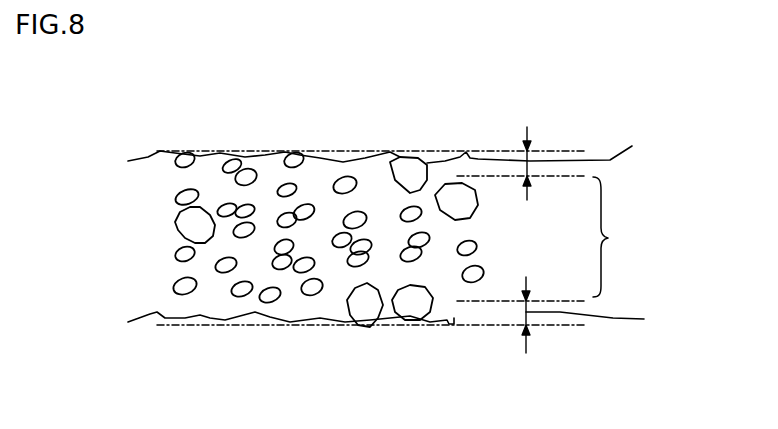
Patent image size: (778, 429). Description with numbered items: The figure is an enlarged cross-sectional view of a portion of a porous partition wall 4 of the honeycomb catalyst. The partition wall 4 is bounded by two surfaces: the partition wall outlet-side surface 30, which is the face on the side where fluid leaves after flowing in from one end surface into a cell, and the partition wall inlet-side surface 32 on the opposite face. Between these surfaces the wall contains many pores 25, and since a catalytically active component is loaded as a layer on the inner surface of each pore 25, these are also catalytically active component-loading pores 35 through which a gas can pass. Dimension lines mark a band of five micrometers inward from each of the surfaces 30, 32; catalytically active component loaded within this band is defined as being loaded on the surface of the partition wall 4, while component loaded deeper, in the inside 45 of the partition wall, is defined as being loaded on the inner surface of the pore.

The partition wall 4 is at (190, 129).
The partition wall outlet-side surface 30 is at (408, 161).
The partition wall inlet-side surface 32 is at (414, 318).
The inside of a partition wall 45 is at (608, 238).
The pore 25 is at (313, 292).
The catalytically active component-loading pore 35 is at (341, 301).